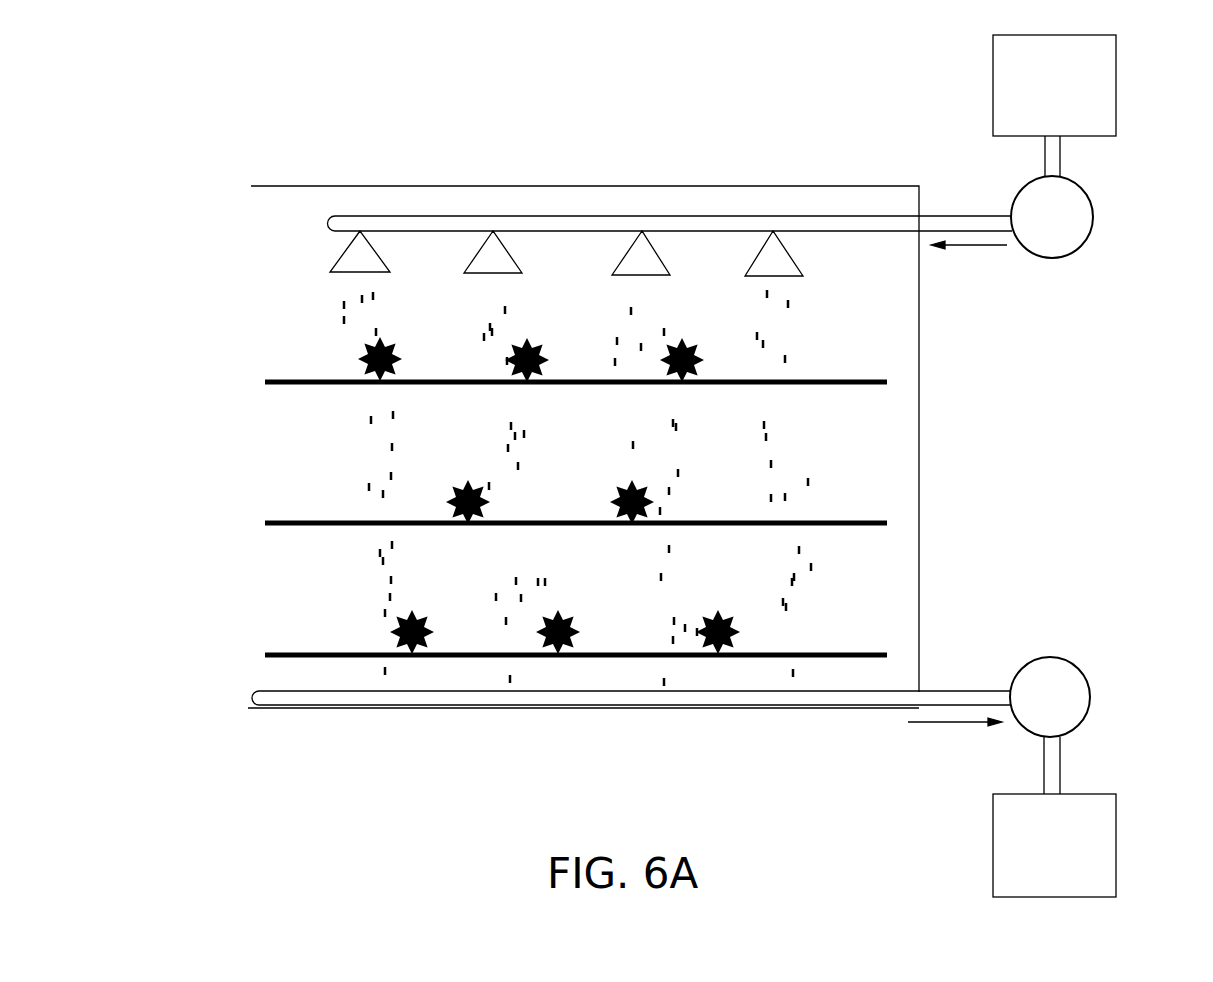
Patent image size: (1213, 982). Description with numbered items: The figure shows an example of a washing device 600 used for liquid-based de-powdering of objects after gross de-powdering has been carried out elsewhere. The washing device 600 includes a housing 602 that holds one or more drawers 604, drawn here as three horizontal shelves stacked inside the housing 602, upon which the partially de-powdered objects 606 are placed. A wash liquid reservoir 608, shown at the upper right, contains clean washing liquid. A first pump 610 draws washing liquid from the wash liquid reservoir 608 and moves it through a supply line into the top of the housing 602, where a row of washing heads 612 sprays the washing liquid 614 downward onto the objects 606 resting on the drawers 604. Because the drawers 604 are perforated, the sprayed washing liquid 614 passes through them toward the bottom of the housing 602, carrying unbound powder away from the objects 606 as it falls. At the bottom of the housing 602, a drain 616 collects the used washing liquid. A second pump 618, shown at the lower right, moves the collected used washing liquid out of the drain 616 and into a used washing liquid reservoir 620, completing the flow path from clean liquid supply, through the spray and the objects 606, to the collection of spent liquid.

The washing device 600 is at (207, 792).
The housing 602 is at (539, 185).
The drawers 604 is at (278, 653).
The partially de-powdered objects 606 is at (540, 345).
The wash liquid reservoir 608 is at (1003, 94).
The first pump 610 is at (1072, 238).
The washing heads 612 is at (350, 264).
The washing liquid 614 is at (300, 315).
The drain 616 is at (443, 697).
The second pump 618 is at (1074, 679).
The used washing liquid reservoir 620 is at (1105, 822).